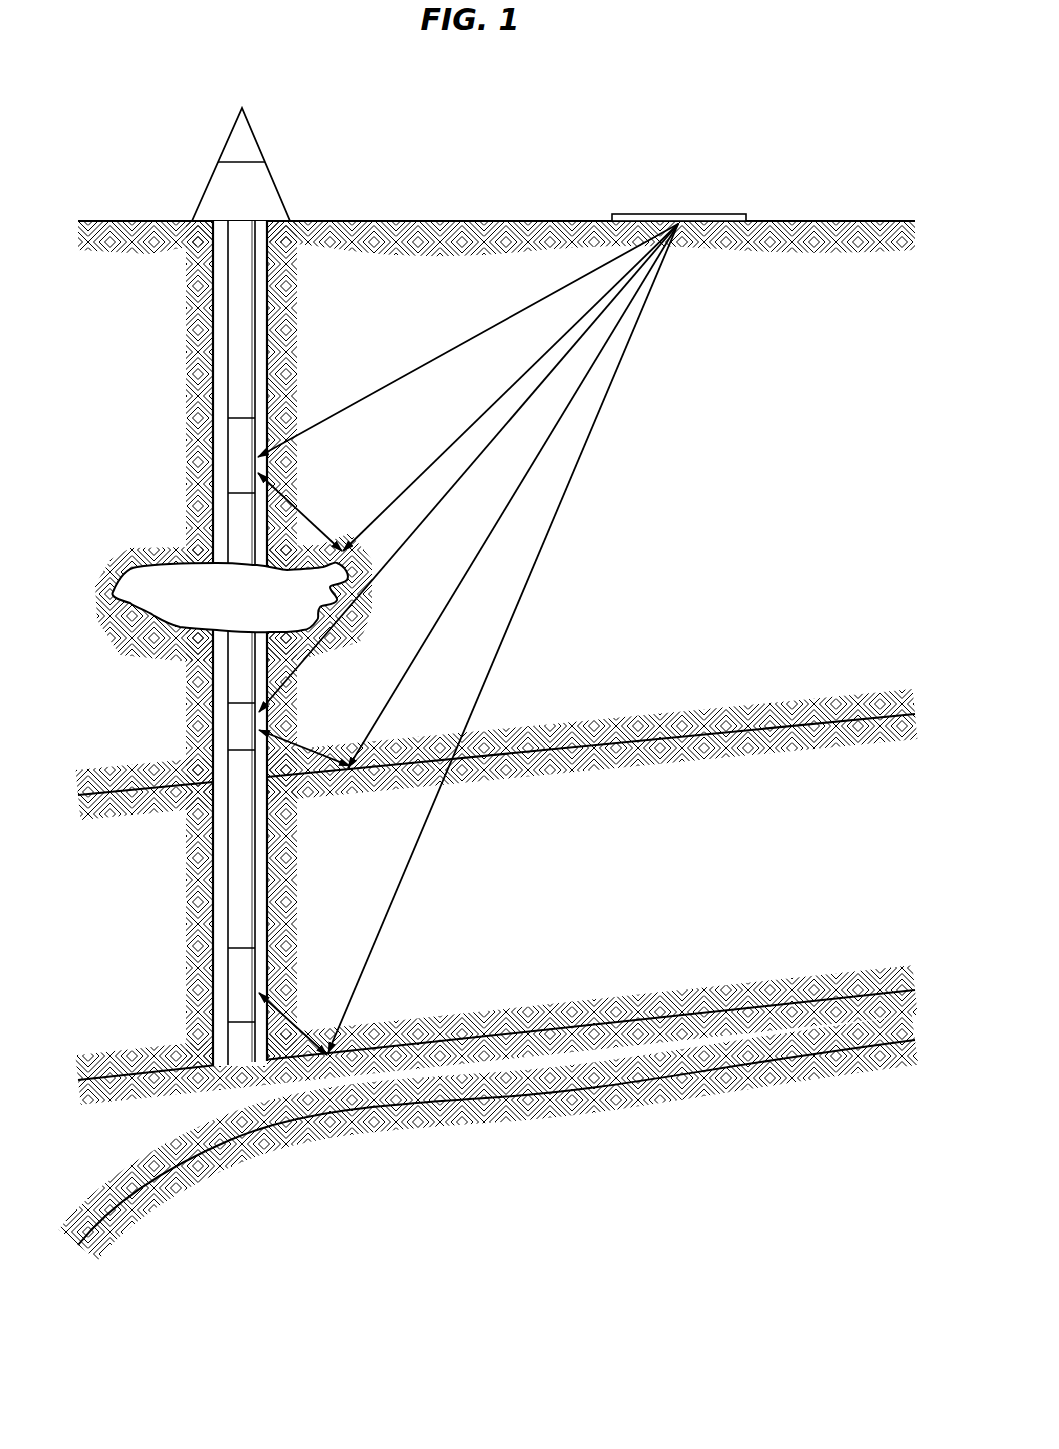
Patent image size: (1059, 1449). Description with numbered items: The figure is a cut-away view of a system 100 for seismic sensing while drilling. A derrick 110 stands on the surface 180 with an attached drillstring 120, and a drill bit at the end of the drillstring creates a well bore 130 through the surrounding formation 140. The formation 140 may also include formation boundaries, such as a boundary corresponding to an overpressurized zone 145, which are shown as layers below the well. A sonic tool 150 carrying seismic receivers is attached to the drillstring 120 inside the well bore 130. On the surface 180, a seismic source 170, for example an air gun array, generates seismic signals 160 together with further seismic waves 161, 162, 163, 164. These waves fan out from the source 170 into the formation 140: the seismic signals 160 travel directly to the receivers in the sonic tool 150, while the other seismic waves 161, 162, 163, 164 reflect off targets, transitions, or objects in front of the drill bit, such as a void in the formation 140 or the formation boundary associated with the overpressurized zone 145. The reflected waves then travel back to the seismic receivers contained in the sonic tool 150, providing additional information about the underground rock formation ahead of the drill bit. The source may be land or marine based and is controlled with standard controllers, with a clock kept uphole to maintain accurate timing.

The system 100 is at (598, 130).
The derrick 110 is at (257, 138).
The drillstring 120 is at (256, 292).
The well bore 130 is at (269, 343).
The formation 140 is at (841, 489).
The overpressurized zone 145 is at (841, 872).
The sonic tool 150 is at (236, 460).
The seismic signals 160 is at (476, 335).
The seismic wave 161 is at (475, 420).
The seismic wave 162 is at (466, 473).
The seismic wave 163 is at (544, 448).
The seismic wave 164 is at (560, 510).
The seismic source 170 is at (710, 213).
The surface 180 is at (845, 220).